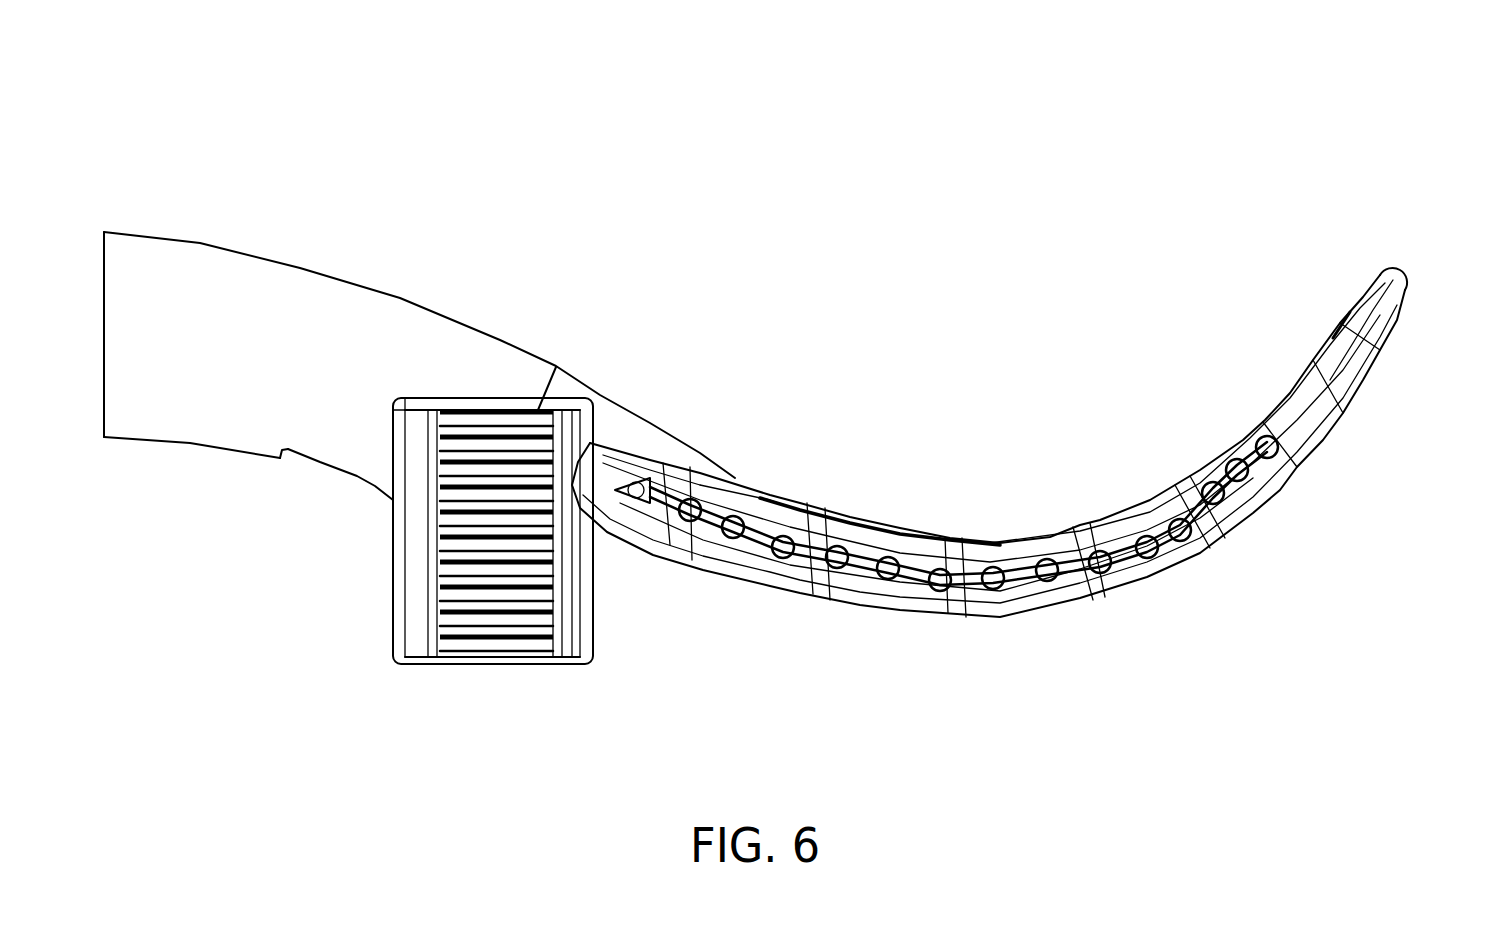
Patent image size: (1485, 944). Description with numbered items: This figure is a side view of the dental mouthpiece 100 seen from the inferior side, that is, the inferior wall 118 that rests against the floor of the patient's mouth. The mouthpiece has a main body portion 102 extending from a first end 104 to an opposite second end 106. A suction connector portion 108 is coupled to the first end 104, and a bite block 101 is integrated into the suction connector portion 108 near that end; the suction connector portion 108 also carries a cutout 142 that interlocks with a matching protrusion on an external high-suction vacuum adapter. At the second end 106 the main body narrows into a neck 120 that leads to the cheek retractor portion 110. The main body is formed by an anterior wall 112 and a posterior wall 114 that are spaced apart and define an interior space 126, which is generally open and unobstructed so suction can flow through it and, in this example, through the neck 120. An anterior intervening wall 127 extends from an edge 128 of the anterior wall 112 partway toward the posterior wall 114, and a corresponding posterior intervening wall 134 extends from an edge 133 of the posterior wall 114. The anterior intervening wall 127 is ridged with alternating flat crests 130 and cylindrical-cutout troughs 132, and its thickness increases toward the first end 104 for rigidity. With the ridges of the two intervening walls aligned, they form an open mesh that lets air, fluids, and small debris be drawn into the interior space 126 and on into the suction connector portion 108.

The dental mouthpiece 100 is at (1200, 58).
The suction connector portion 108 is at (253, 255).
The cutout 142 is at (305, 457).
The bite block 101 is at (413, 648).
The first end 104 is at (638, 675).
The inferior wall 118 is at (603, 467).
The main body portion 102 is at (1018, 362).
The anterior wall 112 is at (800, 515).
The edge of the posterior wall 133 is at (1043, 603).
The posterior intervening wall 134 is at (1023, 597).
The interior space 126 is at (883, 585).
The crest 130 is at (753, 547).
The trough 132 is at (778, 560).
The edge of the anterior wall 128 is at (1073, 557).
The anterior intervening wall 127 is at (1107, 560).
The posterior wall 114 is at (1007, 613).
The cheek retractor portion 110 is at (1365, 293).
The neck 120 is at (1308, 495).
The second end 106 is at (1295, 628).